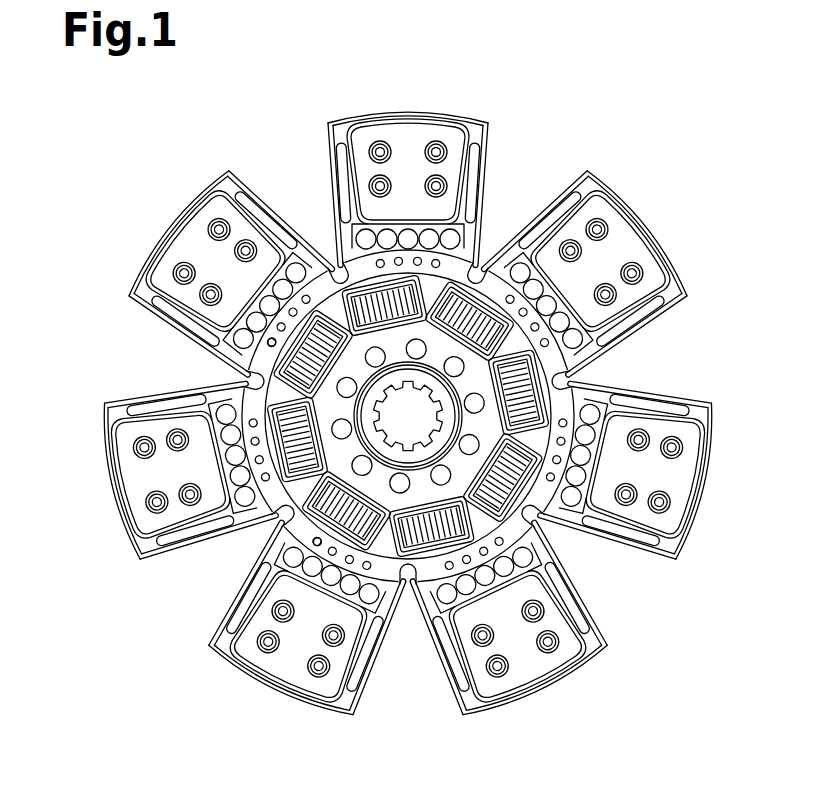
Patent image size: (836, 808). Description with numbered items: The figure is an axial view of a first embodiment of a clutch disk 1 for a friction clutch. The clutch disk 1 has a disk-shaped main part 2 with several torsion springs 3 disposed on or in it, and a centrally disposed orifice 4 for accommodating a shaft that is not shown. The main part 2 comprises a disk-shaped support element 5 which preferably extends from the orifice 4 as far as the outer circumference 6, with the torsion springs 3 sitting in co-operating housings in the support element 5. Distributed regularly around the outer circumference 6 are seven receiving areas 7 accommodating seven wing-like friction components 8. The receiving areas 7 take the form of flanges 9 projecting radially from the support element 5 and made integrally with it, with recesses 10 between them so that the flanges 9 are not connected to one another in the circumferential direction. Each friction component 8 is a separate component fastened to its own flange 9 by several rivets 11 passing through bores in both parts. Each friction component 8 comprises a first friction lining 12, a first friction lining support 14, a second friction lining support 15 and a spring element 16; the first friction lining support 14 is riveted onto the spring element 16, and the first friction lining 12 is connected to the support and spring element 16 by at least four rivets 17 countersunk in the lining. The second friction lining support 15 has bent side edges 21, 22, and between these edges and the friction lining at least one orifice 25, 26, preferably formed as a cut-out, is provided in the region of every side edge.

The clutch disk 1 is at (644, 102).
The main part 2 is at (485, 395).
The torsion springs 3 is at (465, 549).
The orifice 4 is at (417, 427).
The support element 5 is at (457, 264).
The outer circumference 6 is at (330, 250).
The receiving areas 7 is at (266, 344).
The friction components 8 is at (170, 210).
The flanges 9 is at (308, 534).
The recesses 10 is at (407, 601).
The rivets 11 is at (273, 558).
The first friction lining 12 is at (630, 232).
The first friction lining support 14 is at (628, 196).
The second friction lining support 15 is at (593, 163).
The spring element 16 is at (602, 332).
The rivets 17 is at (654, 262).
The bent side edge 21 is at (221, 165).
The bent side edge 22 is at (125, 287).
The orifice 25 is at (258, 205).
The orifice 26 is at (165, 319).